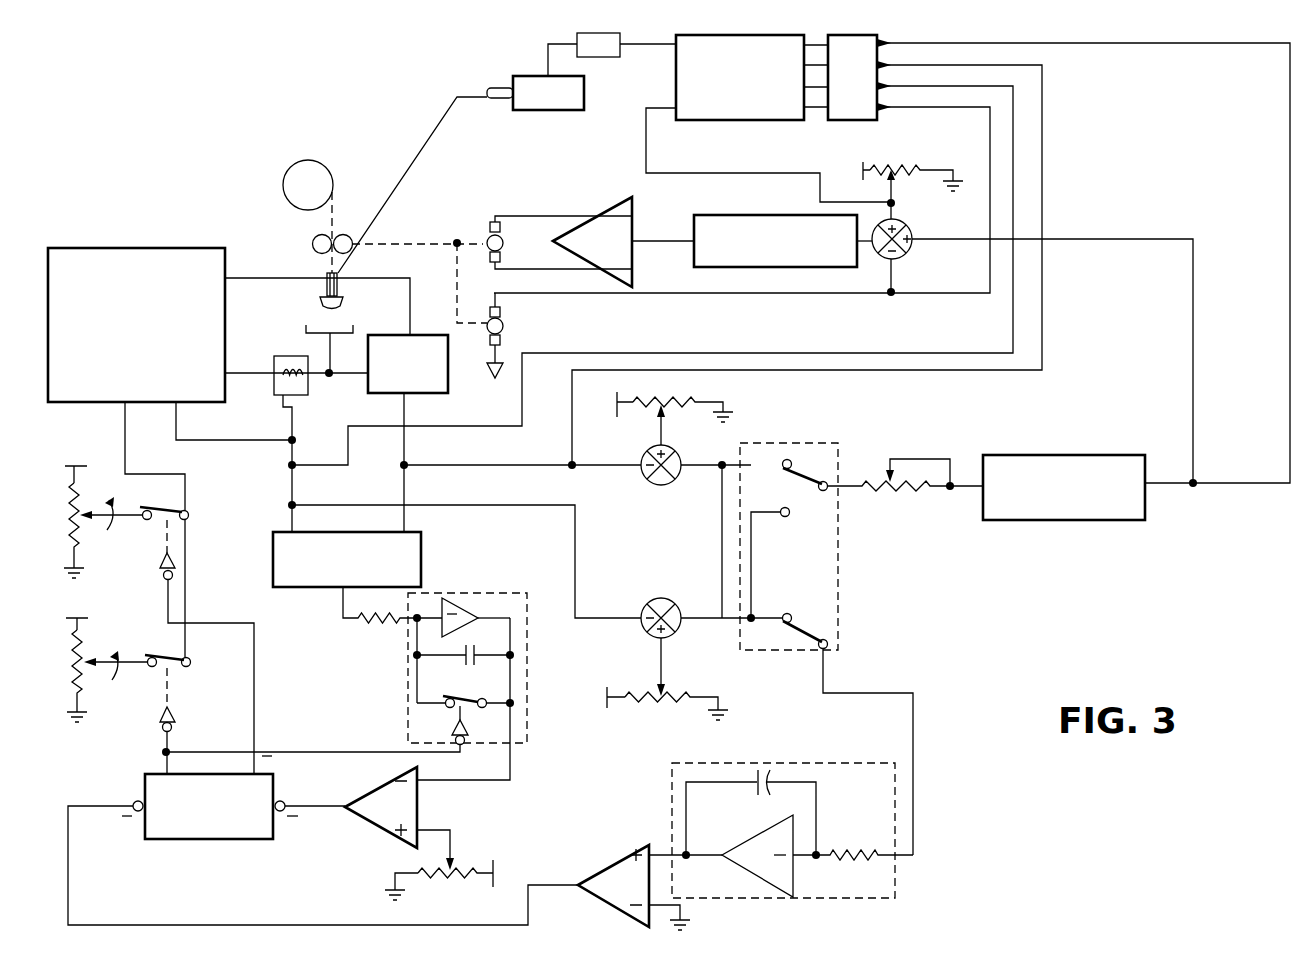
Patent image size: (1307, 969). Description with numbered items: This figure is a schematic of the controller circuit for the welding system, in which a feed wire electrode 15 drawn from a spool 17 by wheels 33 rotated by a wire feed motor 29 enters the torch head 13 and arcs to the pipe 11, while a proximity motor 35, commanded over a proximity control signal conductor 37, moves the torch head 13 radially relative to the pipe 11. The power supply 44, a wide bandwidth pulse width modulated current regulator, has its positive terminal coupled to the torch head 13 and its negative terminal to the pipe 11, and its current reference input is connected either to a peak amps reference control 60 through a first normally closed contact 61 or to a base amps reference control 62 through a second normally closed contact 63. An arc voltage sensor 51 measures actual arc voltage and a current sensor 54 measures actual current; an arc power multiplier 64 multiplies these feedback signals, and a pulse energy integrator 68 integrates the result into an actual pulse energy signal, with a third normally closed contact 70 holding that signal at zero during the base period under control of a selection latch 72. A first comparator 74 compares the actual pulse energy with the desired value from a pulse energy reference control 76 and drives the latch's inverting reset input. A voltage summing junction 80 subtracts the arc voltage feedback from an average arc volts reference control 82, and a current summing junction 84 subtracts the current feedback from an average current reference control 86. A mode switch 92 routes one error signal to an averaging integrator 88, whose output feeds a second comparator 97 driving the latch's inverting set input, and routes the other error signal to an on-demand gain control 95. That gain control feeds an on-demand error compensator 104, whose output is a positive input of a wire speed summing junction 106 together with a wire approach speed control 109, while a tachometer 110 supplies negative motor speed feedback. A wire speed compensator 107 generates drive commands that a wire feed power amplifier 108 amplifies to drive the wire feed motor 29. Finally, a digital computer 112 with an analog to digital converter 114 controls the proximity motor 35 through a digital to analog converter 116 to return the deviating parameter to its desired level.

The pipe 11 is at (336, 340).
The torch head 13 is at (343, 303).
The feed wire electrode 15 is at (340, 190).
The spool 17 is at (322, 165).
The wire feed motor 29 is at (487, 232).
The wheels 33 is at (330, 234).
The proximity motor 35 is at (548, 111).
The proximity control signal conductor 37 is at (660, 48).
The power supply 44 is at (152, 248).
The arc voltage sensor 51 is at (448, 385).
The current sensor 54 is at (282, 356).
The peak amps reference control 60 is at (68, 508).
The first normally closed contact 61 is at (180, 506).
The base amps reference control 62 is at (72, 638).
The second normally closed contact 63 is at (178, 666).
The arc power multiplier 64 is at (421, 553).
The pulse energy integrator 68 is at (508, 593).
The third normally closed contact 70 is at (460, 696).
The selection latch 72 is at (218, 839).
The first comparator 74 is at (372, 786).
The pulse energy reference control 76 is at (483, 876).
The voltage summing junction 80 is at (661, 486).
The average arc volts reference control 82 is at (700, 402).
The current summing junction 84 is at (673, 600).
The average current reference control 86 is at (695, 700).
The averaging integrator 88 is at (898, 888).
The mode switch 92 is at (838, 555).
The on-demand gain control 95 is at (905, 490).
The second comparator 97 is at (612, 866).
The on-demand error compensator 104 is at (1050, 520).
The wire speed summing junction 106 is at (908, 254).
The wire speed compensator 107 is at (752, 215).
The wire feed power amplifier 108 is at (602, 210).
The wire approach speed control 109 is at (933, 170).
The tachometer 110 is at (503, 323).
The digital computer 112 is at (742, 35).
The analog to digital converter 114 is at (850, 120).
The digital to analog converter 116 is at (587, 35).